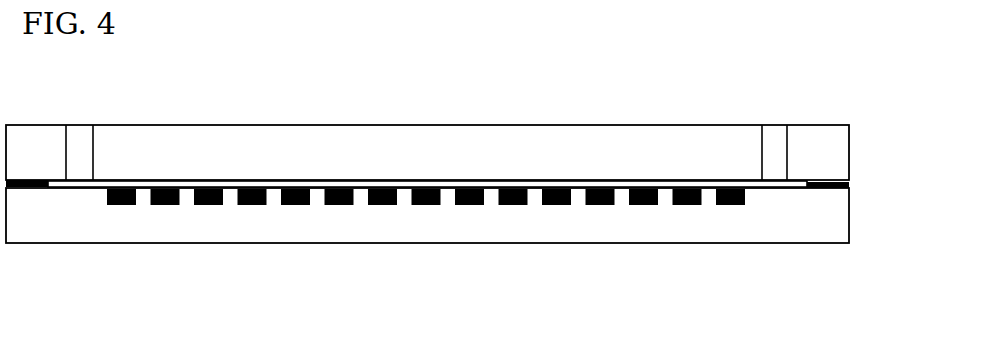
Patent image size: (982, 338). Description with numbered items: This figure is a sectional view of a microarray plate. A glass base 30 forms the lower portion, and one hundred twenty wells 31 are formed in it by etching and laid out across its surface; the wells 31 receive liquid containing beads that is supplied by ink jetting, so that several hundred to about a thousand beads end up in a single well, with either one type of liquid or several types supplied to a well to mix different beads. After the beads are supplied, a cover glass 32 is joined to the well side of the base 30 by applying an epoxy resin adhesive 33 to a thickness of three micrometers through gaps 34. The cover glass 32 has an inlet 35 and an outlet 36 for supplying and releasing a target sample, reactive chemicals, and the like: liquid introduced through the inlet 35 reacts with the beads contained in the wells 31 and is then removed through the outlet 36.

The glass base 30 is at (348, 225).
The wells 31 is at (515, 205).
The cover glass 32 is at (280, 142).
The epoxy resin adhesive 33 is at (832, 177).
The gaps 34 is at (348, 175).
The inlet 35 is at (73, 125).
The outlet 36 is at (782, 143).